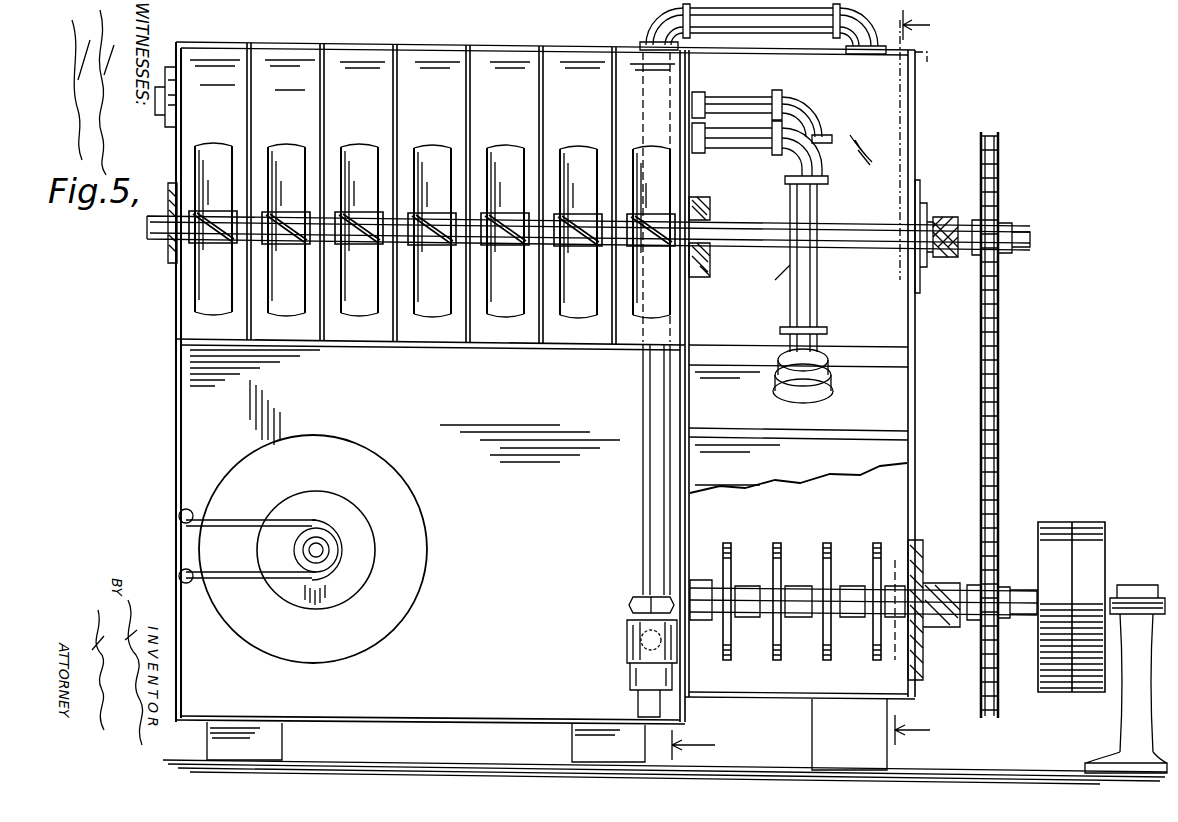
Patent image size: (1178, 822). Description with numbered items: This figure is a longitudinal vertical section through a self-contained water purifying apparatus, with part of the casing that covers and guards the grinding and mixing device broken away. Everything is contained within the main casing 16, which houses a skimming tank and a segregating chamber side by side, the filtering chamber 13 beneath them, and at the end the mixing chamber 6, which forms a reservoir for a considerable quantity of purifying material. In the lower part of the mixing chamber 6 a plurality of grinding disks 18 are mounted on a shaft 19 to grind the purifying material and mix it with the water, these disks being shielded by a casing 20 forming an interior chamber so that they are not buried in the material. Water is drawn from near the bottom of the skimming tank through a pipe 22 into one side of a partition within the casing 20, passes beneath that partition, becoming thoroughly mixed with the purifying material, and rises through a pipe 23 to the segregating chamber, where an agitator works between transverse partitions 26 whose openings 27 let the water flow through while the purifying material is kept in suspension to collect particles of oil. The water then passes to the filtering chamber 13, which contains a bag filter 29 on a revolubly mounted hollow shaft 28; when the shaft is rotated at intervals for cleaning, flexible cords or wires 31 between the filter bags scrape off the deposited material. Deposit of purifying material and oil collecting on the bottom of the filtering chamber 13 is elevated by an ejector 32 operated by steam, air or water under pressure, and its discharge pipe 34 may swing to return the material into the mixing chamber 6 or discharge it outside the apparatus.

The mixing chamber 6 is at (680, 45).
The filtering chamber 13 is at (428, 533).
The main casing 16 is at (176, 312).
The grinding disks 18 is at (770, 560).
The shaft 19 is at (1027, 585).
The casing 20 is at (780, 371).
The pipe 22 is at (735, 102).
The pipe 23 is at (745, 150).
The transverse partitions 26 is at (395, 110).
The openings 27 is at (258, 170).
The hollow shaft 28 is at (330, 549).
The bag filter 29 is at (313, 549).
The flexible cords or wires 31 is at (222, 522).
The ejector 32 is at (628, 640).
The discharge pipe 34 is at (628, 540).